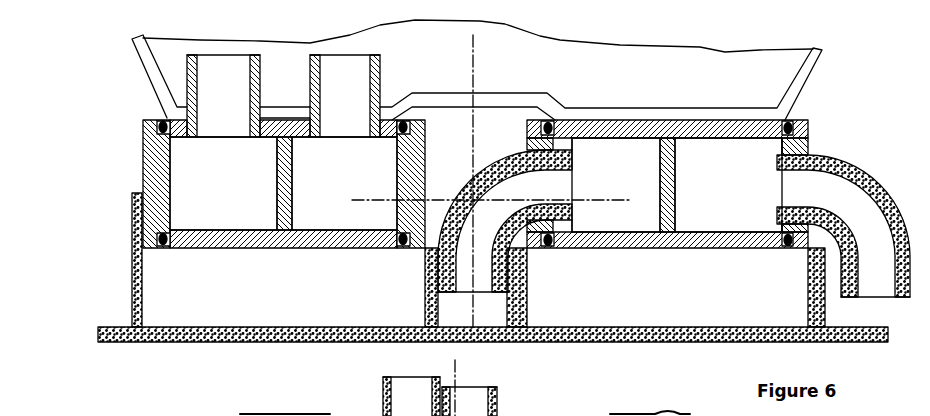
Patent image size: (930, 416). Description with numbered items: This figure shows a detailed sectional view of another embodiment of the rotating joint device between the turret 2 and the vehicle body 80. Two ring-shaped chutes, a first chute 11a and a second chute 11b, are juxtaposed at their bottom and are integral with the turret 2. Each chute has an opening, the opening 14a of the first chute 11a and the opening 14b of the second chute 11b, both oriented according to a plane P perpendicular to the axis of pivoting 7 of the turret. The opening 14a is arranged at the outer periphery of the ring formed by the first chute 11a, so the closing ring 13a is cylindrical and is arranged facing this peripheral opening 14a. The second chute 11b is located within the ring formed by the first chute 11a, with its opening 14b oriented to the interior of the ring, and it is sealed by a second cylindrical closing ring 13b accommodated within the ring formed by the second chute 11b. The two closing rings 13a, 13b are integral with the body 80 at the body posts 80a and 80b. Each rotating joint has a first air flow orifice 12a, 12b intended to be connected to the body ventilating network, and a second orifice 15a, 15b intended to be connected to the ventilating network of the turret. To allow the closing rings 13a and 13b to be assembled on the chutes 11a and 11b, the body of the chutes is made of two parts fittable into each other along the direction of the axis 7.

The turret 2 is at (652, 77).
The axis of pivoting of the turret 7 is at (470, 68).
The first chute 11a is at (727, 132).
The second chute 11b is at (612, 130).
The first air flow orifice 12a is at (842, 222).
The first air flow orifice 12b is at (508, 200).
The closing ring 13a is at (143, 178).
The second cylindrical closing ring 13b is at (527, 135).
The opening of the first chute 14a is at (175, 182).
The opening of the second chute 14b is at (395, 180).
The second orifice 15a is at (220, 80).
The second orifice 15b is at (352, 88).
The body of the vehicle 80 is at (140, 333).
The body post 80a is at (135, 262).
The body post 80b is at (437, 308).
The plane P is at (527, 252).